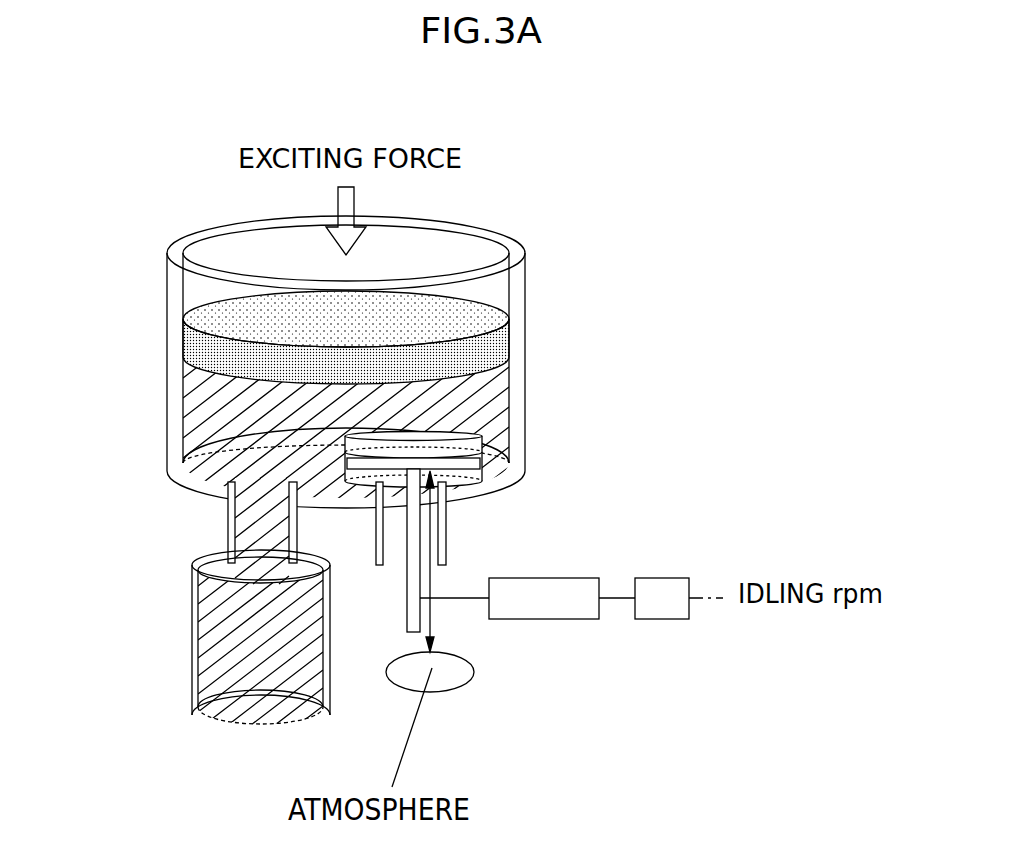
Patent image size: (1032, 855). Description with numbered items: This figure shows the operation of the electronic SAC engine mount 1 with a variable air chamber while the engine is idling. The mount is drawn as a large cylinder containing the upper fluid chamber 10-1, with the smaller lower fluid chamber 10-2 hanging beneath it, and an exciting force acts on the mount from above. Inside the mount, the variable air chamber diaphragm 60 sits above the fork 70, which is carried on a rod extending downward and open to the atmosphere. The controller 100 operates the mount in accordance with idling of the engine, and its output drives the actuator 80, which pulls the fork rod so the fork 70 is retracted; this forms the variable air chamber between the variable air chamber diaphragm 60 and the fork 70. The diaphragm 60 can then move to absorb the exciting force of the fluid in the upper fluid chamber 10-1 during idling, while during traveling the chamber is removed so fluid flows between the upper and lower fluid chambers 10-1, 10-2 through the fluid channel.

The electronic SAC engine mount 1 is at (158, 207).
The upper fluid chamber 10-1 is at (208, 415).
The lower fluid chamber 10-2 is at (210, 646).
The variable air chamber diaphragm 60 is at (483, 436).
The fork 70 is at (483, 463).
The actuator 80 is at (553, 620).
The controller 100 is at (664, 620).